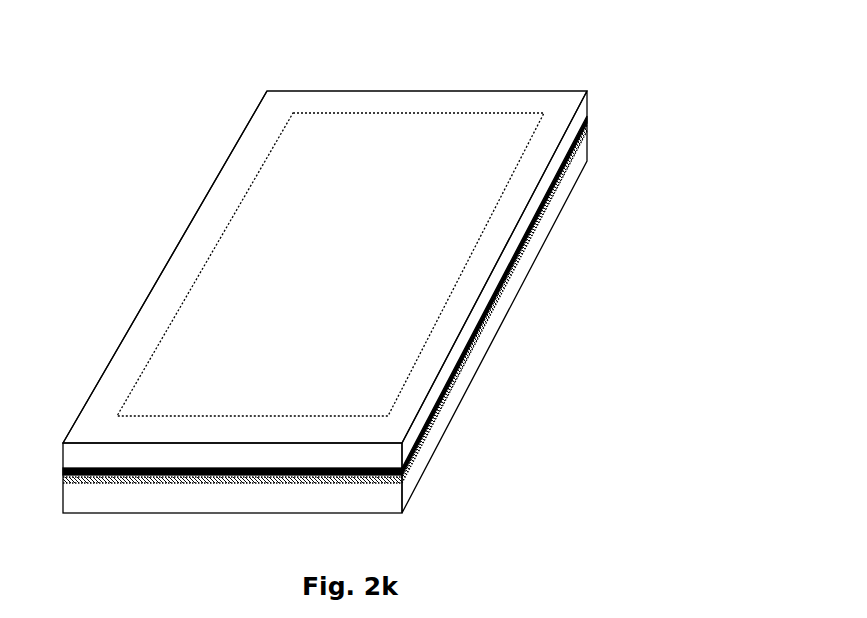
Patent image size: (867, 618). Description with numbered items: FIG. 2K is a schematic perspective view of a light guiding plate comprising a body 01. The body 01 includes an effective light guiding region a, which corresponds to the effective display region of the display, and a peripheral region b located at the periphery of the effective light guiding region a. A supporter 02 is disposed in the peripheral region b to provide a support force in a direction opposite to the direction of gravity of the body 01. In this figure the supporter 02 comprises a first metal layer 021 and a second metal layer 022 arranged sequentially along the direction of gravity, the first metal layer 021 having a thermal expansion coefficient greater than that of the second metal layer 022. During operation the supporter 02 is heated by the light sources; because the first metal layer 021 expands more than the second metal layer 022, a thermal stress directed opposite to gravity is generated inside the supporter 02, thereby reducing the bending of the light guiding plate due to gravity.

The body 01 is at (329, 279).
The supporter 02 is at (325, 330).
The first metal layer 021 is at (377, 470).
The second metal layer 022 is at (370, 484).
The effective light guiding region a is at (363, 165).
The peripheral region b is at (290, 110).